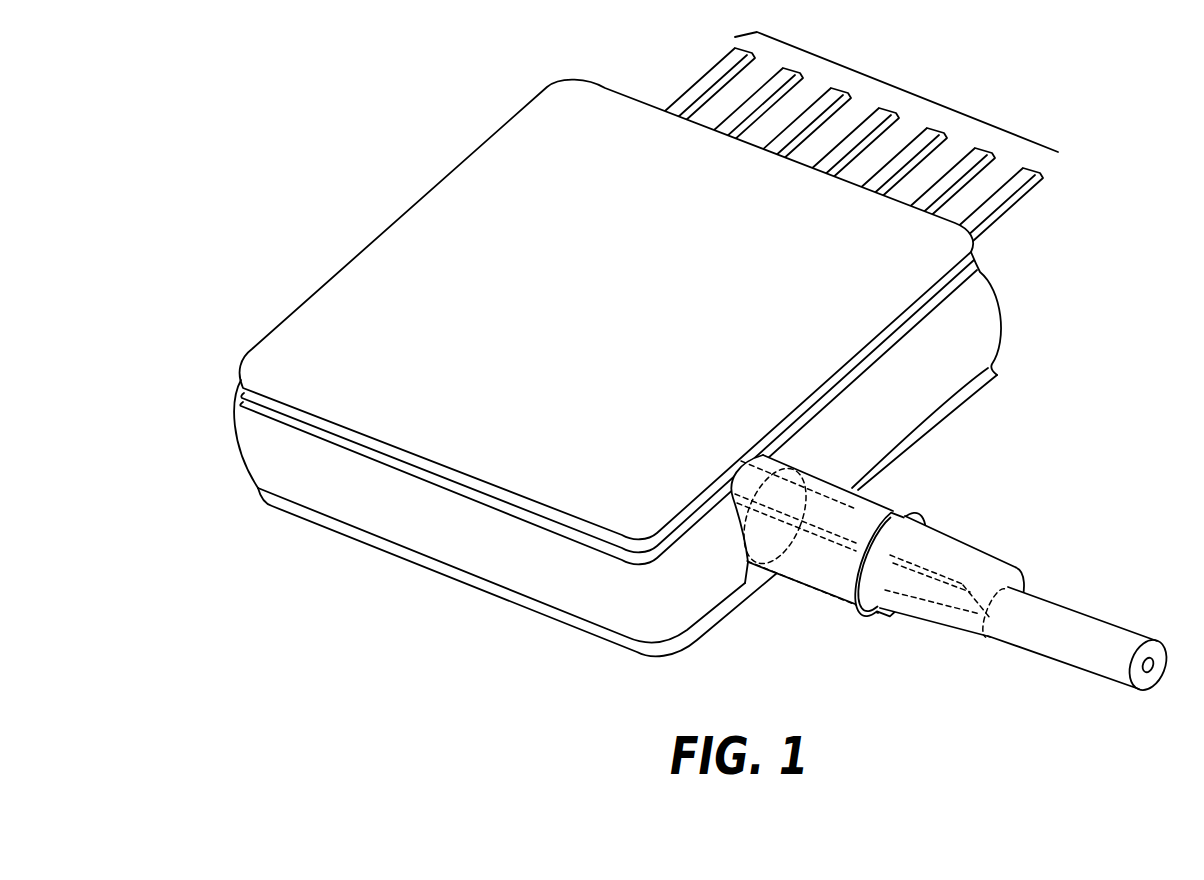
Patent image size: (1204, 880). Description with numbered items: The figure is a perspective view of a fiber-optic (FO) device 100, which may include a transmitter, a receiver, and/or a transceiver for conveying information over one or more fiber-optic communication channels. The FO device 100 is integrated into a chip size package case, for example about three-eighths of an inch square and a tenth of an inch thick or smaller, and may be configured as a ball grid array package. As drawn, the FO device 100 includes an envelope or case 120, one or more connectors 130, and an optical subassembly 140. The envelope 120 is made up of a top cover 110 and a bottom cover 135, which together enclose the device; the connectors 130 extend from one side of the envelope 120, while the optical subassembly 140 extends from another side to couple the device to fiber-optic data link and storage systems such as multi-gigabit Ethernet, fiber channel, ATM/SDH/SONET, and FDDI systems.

The fiber-optic (FO) device 100 is at (665, 354).
The top cover 110 is at (437, 198).
The envelope 120 is at (258, 458).
The connectors 130 is at (903, 104).
The bottom cover 135 is at (360, 543).
The optical subassembly 140 is at (1016, 526).